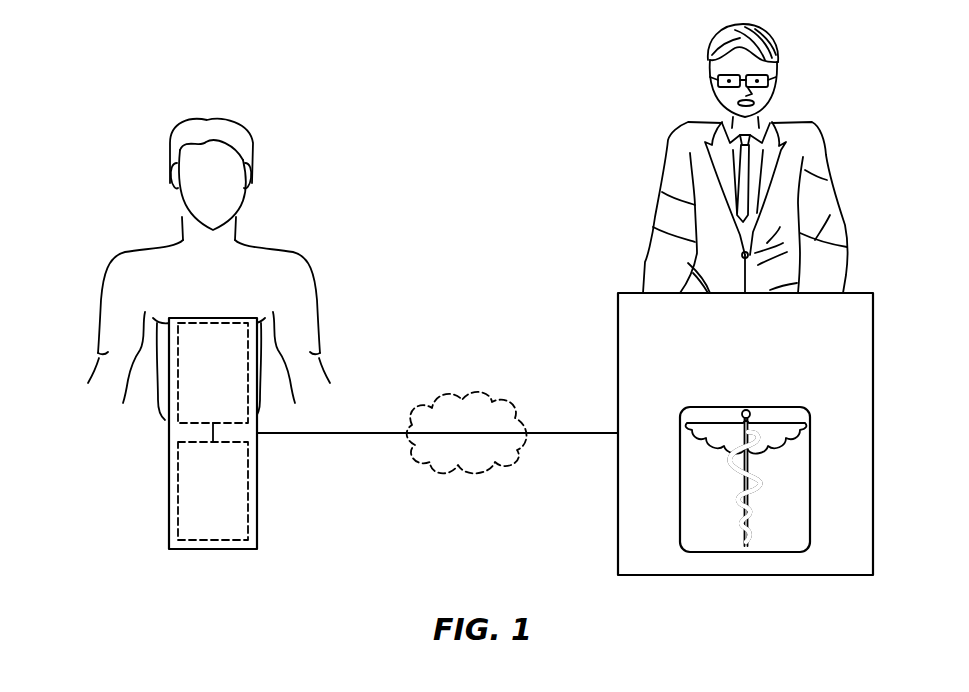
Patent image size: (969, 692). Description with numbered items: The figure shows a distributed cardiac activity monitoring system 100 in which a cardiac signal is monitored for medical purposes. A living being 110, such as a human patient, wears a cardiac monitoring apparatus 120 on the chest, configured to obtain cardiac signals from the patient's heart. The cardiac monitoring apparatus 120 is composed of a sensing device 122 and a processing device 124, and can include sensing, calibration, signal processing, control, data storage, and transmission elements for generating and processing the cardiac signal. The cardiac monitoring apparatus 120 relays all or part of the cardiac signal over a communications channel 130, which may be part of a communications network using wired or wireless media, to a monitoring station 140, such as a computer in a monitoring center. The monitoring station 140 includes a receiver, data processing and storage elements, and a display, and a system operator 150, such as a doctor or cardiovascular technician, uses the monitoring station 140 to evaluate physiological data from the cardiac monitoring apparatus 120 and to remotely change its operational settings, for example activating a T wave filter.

The distributed cardiac activity monitoring system 100 is at (105, 152).
The living being 110 is at (277, 245).
The cardiac monitoring apparatus 120 is at (169, 493).
The sensing device 122 is at (233, 386).
The processing device 124 is at (233, 504).
The communications channel 130 is at (368, 434).
The monitoring station 140 is at (618, 540).
The system operator 150 is at (800, 120).